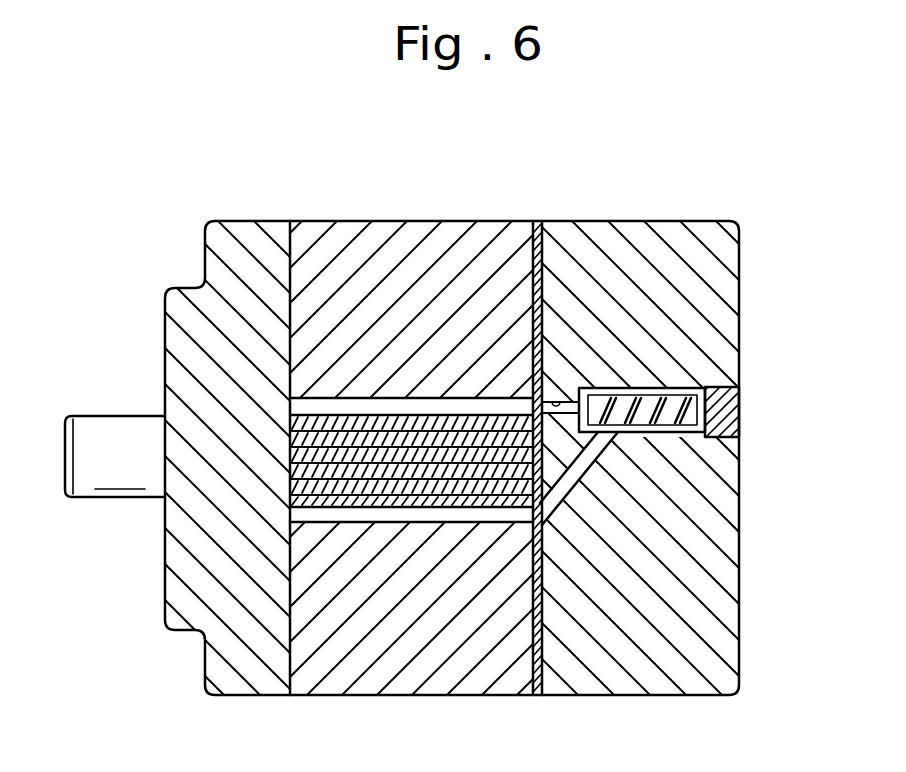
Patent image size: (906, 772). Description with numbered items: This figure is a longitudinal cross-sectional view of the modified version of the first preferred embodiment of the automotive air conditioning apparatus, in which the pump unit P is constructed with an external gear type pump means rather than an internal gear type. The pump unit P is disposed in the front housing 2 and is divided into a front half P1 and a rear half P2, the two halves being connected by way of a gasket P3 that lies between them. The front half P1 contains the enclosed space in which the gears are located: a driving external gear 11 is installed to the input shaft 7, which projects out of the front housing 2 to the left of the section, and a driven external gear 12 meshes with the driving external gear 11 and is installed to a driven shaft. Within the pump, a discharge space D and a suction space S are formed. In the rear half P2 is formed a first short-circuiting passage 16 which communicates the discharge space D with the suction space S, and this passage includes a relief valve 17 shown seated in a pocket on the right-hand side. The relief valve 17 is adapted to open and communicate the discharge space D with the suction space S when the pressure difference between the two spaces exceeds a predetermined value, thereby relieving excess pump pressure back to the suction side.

The pump unit P is at (602, 188).
The front housing 2 is at (251, 236).
The front half P1 is at (413, 236).
The rear half P2 is at (636, 236).
The gasket P3 is at (539, 224).
The discharge space D is at (424, 407).
The suction space S is at (410, 513).
The driving external gear 11 is at (330, 432).
The driven external gear 12 is at (350, 462).
The first short-circuiting passage 16 is at (567, 392).
The relief valve 17 is at (691, 455).
The input shaft 7 is at (85, 452).